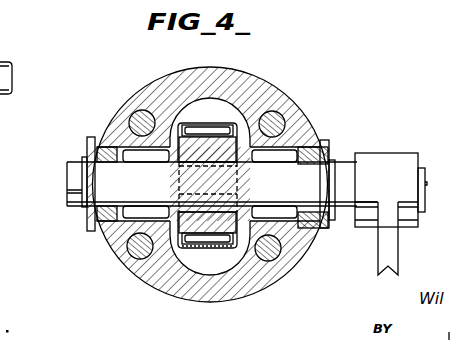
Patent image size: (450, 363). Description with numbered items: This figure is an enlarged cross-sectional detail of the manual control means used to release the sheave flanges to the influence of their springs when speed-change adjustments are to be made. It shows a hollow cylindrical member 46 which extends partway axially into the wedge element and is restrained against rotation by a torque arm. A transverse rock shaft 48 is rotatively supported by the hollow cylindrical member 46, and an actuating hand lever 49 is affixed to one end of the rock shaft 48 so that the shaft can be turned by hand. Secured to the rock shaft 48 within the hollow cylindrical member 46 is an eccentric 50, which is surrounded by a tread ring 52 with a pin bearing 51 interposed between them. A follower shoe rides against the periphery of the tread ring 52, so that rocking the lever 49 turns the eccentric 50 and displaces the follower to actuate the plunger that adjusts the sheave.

The hollow cylindrical member 46 is at (148, 91).
The rock shaft 48 is at (70, 183).
The actuating hand lever 49 is at (393, 248).
The eccentric 50 is at (208, 148).
The pin bearing 51 is at (188, 252).
The tread ring 52 is at (218, 252).